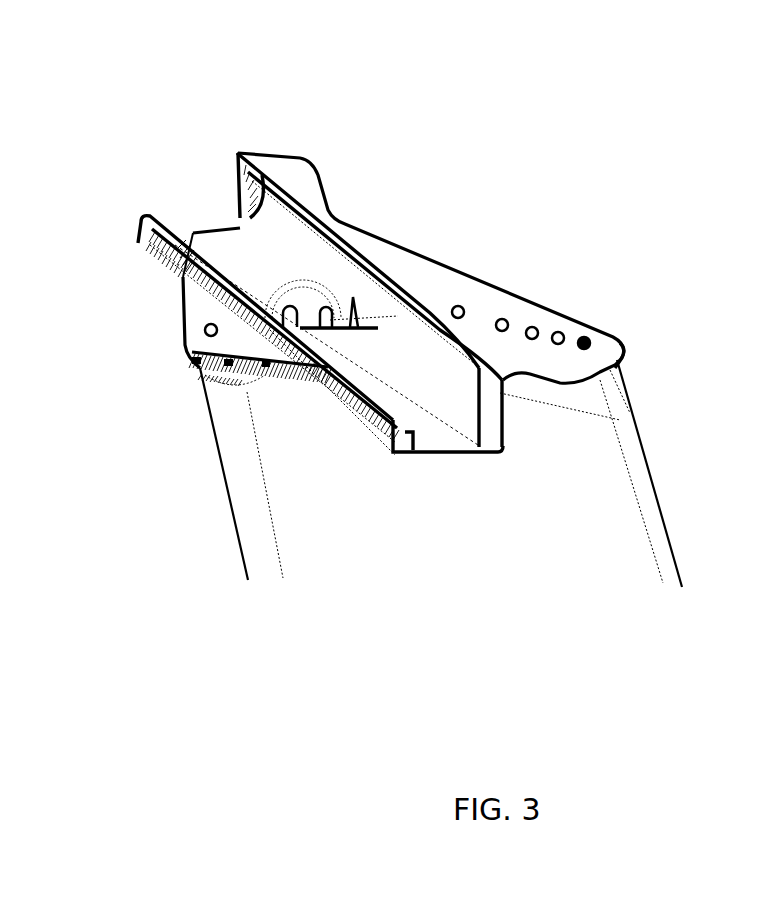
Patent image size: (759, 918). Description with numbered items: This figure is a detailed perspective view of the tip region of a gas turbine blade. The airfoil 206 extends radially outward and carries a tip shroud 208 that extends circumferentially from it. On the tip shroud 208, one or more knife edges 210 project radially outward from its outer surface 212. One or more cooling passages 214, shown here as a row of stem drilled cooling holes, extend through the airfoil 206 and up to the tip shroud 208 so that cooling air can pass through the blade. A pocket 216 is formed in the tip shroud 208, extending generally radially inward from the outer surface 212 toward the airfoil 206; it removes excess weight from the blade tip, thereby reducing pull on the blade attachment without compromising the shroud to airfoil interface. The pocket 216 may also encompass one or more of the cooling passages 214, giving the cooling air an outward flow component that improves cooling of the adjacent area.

The airfoil 206 is at (358, 530).
The tip shroud 208 is at (477, 266).
The knife edges 210 is at (147, 213).
The outer surface 212 is at (450, 428).
The cooling passages 214 is at (564, 336).
The pockets 216 is at (303, 293).